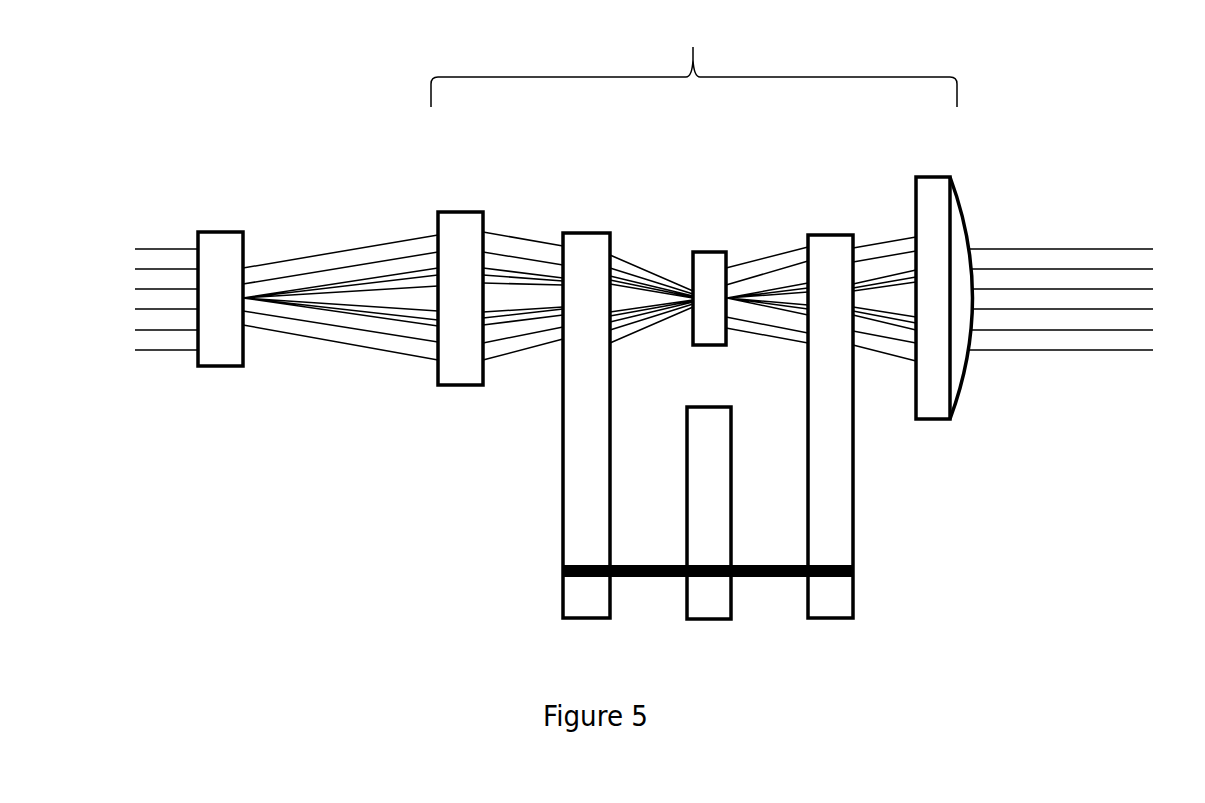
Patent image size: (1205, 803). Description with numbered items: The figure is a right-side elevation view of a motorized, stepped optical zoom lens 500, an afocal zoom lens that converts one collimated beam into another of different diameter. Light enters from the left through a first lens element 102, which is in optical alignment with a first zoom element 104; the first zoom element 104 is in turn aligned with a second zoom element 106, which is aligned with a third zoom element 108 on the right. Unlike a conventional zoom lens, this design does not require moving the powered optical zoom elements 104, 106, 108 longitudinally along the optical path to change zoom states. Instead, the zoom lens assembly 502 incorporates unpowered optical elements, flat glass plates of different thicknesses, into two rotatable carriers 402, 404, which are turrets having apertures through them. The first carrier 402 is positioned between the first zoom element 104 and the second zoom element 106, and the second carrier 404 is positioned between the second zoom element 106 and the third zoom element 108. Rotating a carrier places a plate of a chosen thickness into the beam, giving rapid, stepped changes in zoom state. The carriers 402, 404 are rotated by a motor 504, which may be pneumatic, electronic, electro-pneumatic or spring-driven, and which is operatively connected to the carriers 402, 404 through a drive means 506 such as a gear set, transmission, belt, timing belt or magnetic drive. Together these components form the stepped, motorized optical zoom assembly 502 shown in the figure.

The motorized stepped optical zoom lens 500 is at (325, 130).
The zoom lens assembly 502 is at (694, 55).
The first lens element 102 is at (205, 232).
The first zoom element 104 is at (457, 212).
The carrier 402 is at (585, 233).
The second zoom element 106 is at (710, 252).
The carrier 404 is at (833, 235).
The third zoom element 108 is at (937, 177).
The motor 504 is at (693, 619).
The drive means 506 is at (755, 577).